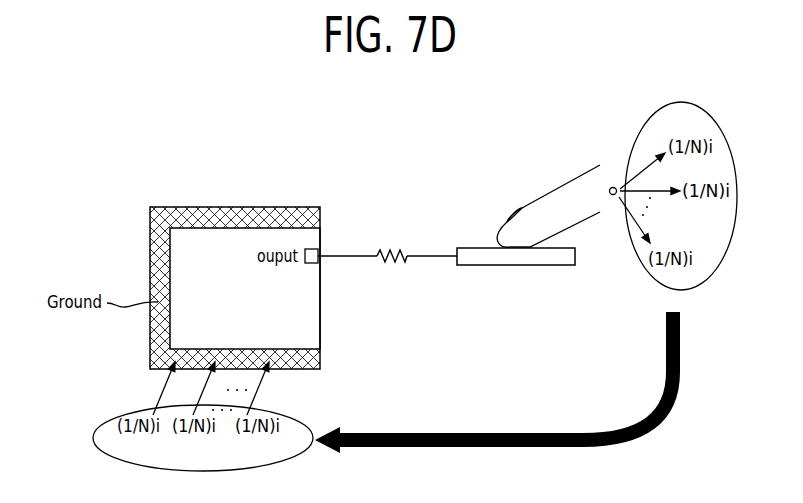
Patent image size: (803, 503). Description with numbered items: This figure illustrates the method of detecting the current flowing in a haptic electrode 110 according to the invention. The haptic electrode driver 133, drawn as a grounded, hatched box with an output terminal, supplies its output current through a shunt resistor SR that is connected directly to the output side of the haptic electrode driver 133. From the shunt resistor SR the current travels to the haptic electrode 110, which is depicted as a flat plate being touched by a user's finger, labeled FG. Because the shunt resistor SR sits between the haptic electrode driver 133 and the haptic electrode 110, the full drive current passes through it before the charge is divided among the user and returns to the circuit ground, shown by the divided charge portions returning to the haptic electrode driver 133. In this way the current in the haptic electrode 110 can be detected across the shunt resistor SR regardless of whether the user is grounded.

The haptic electrode driver 133 is at (229, 330).
The haptic electrode 110 is at (480, 249).
The shunt resistor SR is at (387, 270).
The finger FG is at (549, 206).